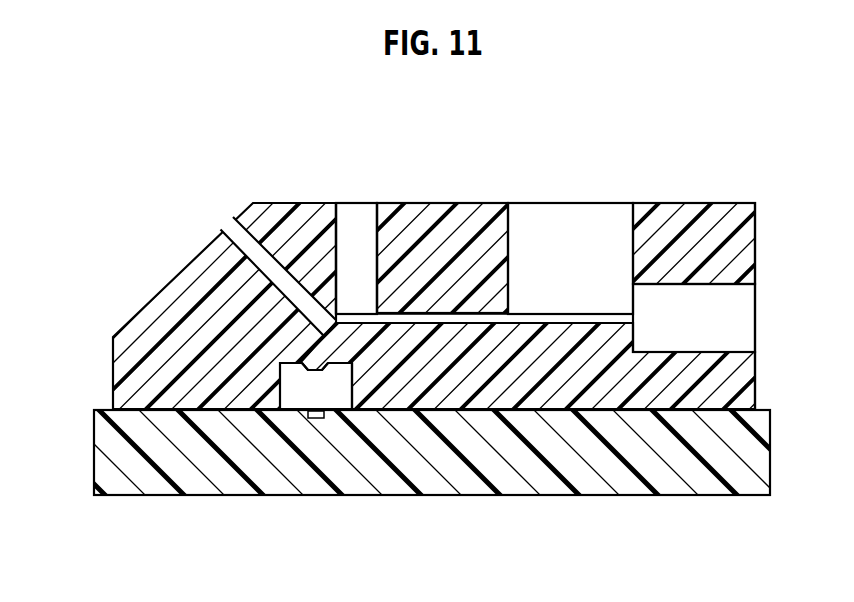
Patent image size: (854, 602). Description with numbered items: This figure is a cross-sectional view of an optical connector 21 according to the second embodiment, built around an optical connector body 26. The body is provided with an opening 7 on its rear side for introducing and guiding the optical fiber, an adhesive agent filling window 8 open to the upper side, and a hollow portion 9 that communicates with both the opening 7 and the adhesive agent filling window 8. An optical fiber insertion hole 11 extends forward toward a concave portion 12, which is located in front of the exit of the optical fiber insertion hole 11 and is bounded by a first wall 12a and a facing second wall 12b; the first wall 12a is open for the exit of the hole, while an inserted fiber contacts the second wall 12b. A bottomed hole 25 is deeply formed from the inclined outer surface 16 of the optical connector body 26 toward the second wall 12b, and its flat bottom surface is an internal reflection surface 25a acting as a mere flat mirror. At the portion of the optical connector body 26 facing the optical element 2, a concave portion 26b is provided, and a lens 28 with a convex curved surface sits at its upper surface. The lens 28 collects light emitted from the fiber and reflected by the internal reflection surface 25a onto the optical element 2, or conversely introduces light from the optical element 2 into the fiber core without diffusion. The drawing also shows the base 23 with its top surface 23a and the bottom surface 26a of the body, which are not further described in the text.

The optical element 2 is at (318, 420).
The opening 7 is at (740, 325).
The adhesive agent filling window 8 is at (596, 218).
The hollow portion 9 is at (552, 232).
The optical fiber insertion hole 11 is at (428, 312).
The concave portion 12 is at (360, 227).
The first wall 12a is at (372, 302).
The second wall 12b is at (341, 312).
The inclined outer surface 16 is at (172, 281).
The optical connector 21 is at (698, 154).
The base 23 is at (621, 478).
The base top surface 23a is at (487, 408).
The bottomed hole 25 is at (236, 232).
The internal reflection surface 25a is at (322, 318).
The optical connector body 26 is at (478, 223).
The body bottom surface 26a is at (200, 412).
The concave portion 26b is at (342, 372).
The lens 28 is at (320, 368).